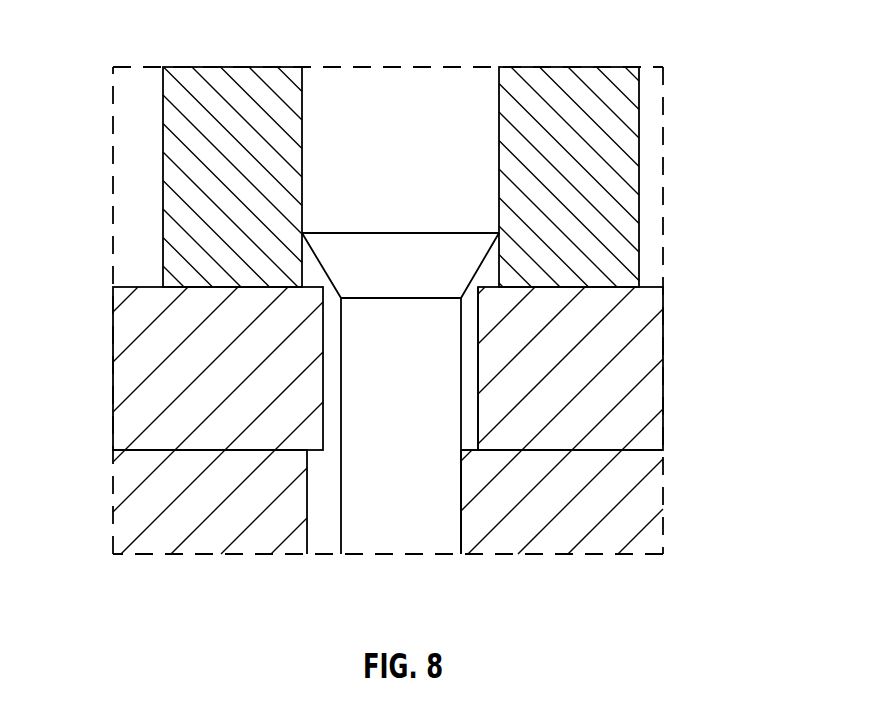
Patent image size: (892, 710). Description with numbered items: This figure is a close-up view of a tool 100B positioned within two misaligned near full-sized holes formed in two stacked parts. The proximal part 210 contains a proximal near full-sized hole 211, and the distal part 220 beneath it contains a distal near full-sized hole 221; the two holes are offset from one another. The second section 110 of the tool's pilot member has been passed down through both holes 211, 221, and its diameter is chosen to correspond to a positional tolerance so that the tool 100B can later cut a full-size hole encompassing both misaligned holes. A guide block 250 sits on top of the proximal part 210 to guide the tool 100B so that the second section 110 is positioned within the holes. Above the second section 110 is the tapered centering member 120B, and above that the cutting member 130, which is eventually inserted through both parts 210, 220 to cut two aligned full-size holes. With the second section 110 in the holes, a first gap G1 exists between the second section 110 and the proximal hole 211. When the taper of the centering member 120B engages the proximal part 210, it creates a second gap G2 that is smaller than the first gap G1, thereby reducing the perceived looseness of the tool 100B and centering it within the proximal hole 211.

The tool 100B is at (485, 53).
The cutting member 130 is at (478, 174).
The guide block 250 is at (623, 223).
The centering member 120B is at (453, 277).
The second section 110 is at (422, 538).
The proximal part 210 is at (645, 335).
The proximal near full-sized hole 211 is at (482, 315).
The first gap G1 is at (465, 362).
The second gap G2 is at (328, 295).
The distal part 220 is at (643, 528).
The distal near full-sized hole 221 is at (463, 522).